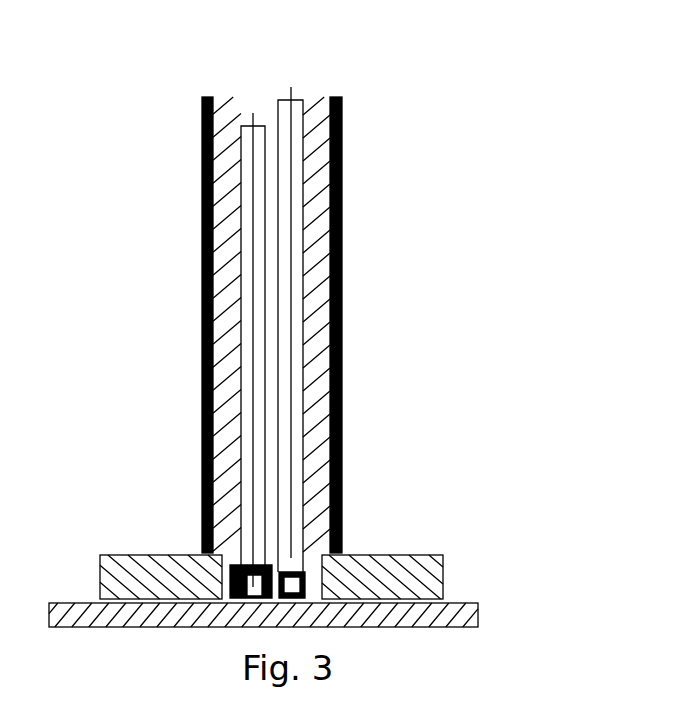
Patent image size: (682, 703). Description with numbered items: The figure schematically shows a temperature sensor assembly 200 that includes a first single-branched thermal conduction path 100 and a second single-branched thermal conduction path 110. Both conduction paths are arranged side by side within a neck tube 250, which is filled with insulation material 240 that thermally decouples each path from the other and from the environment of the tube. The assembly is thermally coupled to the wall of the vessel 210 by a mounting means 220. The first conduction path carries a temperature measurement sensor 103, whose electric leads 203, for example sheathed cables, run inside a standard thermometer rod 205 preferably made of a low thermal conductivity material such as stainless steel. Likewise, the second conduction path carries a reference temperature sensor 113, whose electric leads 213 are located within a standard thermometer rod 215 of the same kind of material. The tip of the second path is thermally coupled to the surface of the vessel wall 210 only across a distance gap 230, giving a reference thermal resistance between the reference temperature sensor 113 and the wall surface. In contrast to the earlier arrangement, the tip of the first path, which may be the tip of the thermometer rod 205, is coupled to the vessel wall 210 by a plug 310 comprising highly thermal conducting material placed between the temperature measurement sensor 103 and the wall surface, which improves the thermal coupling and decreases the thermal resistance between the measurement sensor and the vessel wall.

The first single-branched thermal conduction path 100 is at (183, 306).
The second single-branched thermal conduction path 110 is at (367, 306).
The temperature sensor assembly 200 is at (415, 152).
The neck tube 250 is at (198, 153).
The insulation material 240 is at (230, 268).
The standard thermometer rod 205 is at (237, 370).
The electric leads 203 is at (252, 480).
The temperature measurement sensor 103 is at (254, 587).
The standard thermometer rod 215 is at (302, 282).
The electric leads 213 is at (302, 445).
The reference temperature sensor 113 is at (292, 558).
The distance gap 230 is at (303, 585).
The plug 310 is at (224, 579).
The mounting means 220 is at (434, 550).
The vessel wall 210 is at (481, 610).